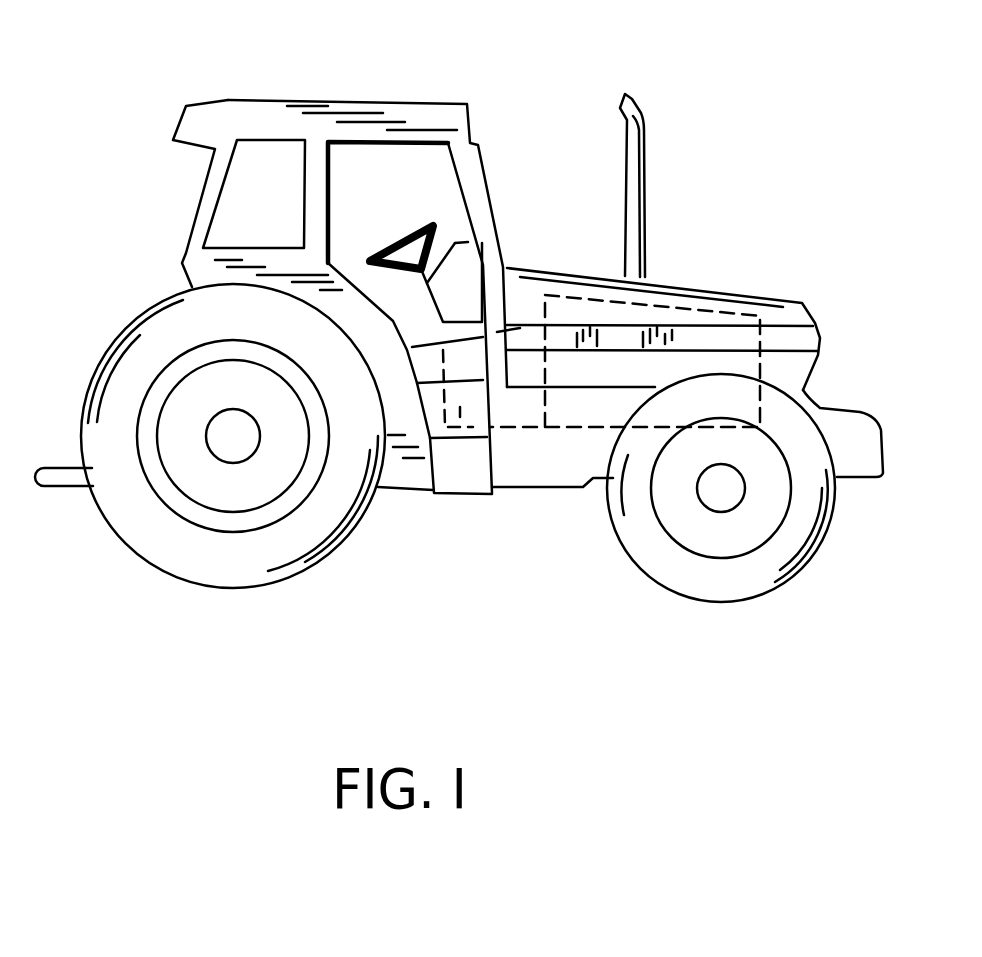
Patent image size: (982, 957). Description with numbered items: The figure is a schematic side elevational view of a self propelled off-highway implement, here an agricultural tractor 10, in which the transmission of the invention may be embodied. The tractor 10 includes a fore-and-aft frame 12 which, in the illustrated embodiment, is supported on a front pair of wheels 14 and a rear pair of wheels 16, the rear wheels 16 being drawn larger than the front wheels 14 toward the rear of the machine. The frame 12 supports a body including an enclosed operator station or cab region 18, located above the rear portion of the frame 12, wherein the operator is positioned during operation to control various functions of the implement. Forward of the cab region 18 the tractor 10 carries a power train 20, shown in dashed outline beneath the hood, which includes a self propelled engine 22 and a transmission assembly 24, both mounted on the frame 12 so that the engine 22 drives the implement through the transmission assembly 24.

The agricultural tractor 10 is at (798, 154).
The fore-and-aft frame 12 is at (577, 463).
The front pair of wheels 14 is at (744, 575).
The rear pair of wheels 16 is at (205, 568).
The operator station 18 is at (442, 193).
The power train 20 is at (652, 304).
The engine 22 is at (690, 318).
The transmission assembly 24 is at (462, 430).